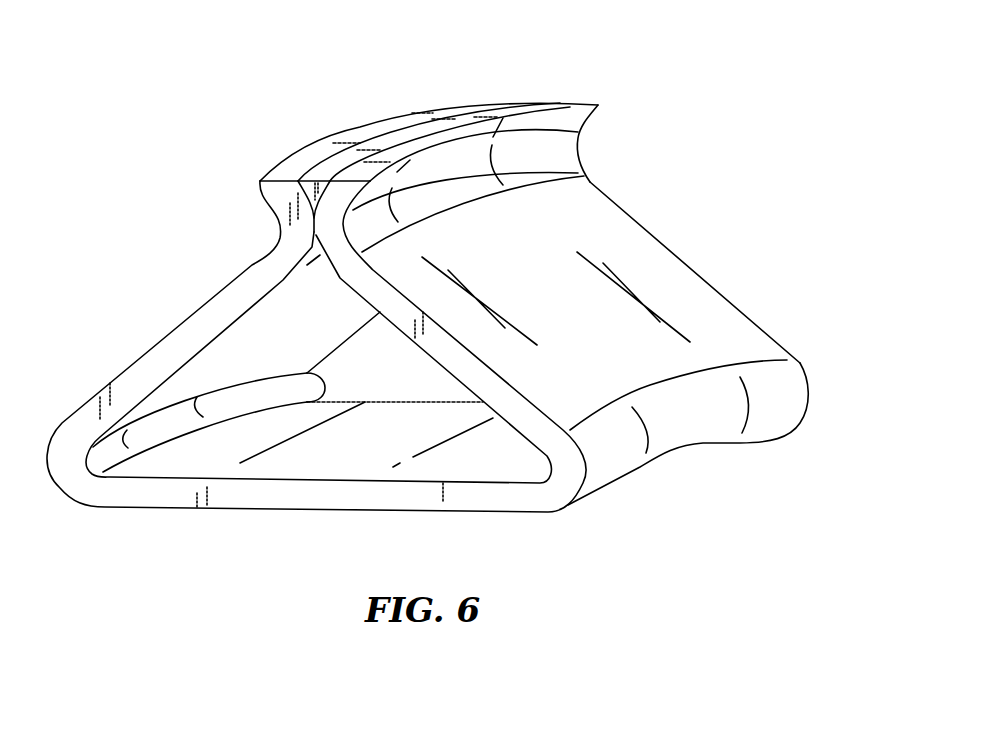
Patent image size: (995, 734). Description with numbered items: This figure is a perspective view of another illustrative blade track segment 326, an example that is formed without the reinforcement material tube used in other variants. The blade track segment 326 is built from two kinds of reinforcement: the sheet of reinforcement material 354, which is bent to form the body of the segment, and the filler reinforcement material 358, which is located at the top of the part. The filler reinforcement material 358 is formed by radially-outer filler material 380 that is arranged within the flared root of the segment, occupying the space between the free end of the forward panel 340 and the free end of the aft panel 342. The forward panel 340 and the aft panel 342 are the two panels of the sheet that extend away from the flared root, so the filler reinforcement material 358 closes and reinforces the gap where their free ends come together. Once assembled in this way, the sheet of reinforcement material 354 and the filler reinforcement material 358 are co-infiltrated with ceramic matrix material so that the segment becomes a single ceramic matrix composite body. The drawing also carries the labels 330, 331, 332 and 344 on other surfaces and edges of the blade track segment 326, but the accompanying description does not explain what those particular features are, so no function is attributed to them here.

The blade track segment 326 is at (736, 47).
The right plate member 330 is at (780, 228).
The inner surface 331 is at (443, 508).
The flange edge 332 is at (676, 145).
The forward panel 340 is at (145, 302).
The aft panel 342 is at (572, 349).
The bottom band 344 is at (238, 552).
The sheet of reinforcement material 354 is at (565, 467).
The filler reinforcement material 358 is at (310, 150).
The radially-outer filler material 380 is at (380, 142).